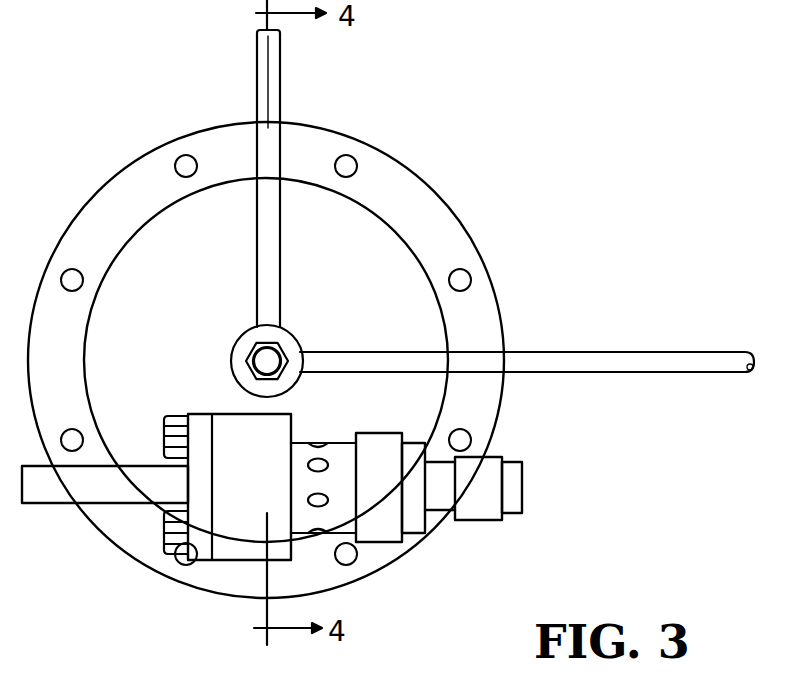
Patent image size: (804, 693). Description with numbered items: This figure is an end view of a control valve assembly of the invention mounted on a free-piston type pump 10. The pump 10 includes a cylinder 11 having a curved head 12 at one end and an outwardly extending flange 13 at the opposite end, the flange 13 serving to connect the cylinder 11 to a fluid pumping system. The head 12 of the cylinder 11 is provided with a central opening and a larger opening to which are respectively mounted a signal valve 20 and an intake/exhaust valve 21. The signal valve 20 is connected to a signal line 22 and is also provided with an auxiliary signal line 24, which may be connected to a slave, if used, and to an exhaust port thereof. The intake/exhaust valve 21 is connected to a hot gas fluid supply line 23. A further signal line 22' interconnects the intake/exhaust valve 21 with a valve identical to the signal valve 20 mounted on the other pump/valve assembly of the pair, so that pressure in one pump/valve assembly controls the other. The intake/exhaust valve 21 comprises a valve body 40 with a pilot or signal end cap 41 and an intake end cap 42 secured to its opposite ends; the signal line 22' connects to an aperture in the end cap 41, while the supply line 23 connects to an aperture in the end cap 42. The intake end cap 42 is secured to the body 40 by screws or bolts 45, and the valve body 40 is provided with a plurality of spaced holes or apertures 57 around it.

The free-piston type pump 10 is at (506, 146).
The cylinder 11 is at (120, 168).
The curved head 12 is at (366, 286).
The outwardly extending flange 13 is at (457, 252).
The signal valve 20 is at (245, 336).
The intake/exhaust valve 21 is at (406, 564).
The signal line 22 is at (527, 337).
The signal line 22' is at (534, 488).
The fluid supply line 23 is at (53, 506).
The auxiliary signal line 24 is at (280, 96).
The valve body 40 is at (230, 428).
The pilot or signal end cap 41 is at (413, 507).
The intake end cap 42 is at (206, 548).
The screws or bolts 45 is at (165, 539).
The holes or apertures 57 is at (323, 462).